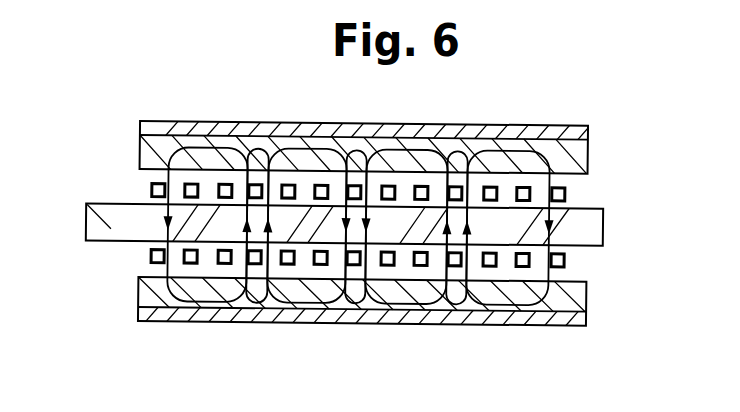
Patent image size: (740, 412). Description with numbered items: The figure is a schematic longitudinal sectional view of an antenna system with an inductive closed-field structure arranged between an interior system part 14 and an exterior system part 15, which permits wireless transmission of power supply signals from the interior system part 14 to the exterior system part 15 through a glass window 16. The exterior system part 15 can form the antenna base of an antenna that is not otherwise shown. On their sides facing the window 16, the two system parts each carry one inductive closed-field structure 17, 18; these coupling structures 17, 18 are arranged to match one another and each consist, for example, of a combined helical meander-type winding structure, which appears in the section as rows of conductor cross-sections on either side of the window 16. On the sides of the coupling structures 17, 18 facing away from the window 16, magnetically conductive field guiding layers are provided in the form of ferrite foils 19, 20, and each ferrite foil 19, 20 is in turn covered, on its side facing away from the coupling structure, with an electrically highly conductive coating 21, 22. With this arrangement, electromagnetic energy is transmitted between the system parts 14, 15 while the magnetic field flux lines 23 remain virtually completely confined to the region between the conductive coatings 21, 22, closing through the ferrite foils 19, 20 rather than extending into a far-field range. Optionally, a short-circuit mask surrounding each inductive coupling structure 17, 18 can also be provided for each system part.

The interior system part 14 is at (349, 335).
The exterior system part 15 is at (361, 109).
The glass window 16 is at (112, 228).
The inductive closed-field structure 17 is at (150, 258).
The inductive closed-field structure 18 is at (150, 188).
The ferrite foil 19 is at (578, 291).
The ferrite foil 20 is at (587, 153).
The electrically highly conductive coating 21 is at (240, 318).
The electrically highly conductive coating 22 is at (240, 122).
The magnetic field flux lines 23 is at (552, 203).